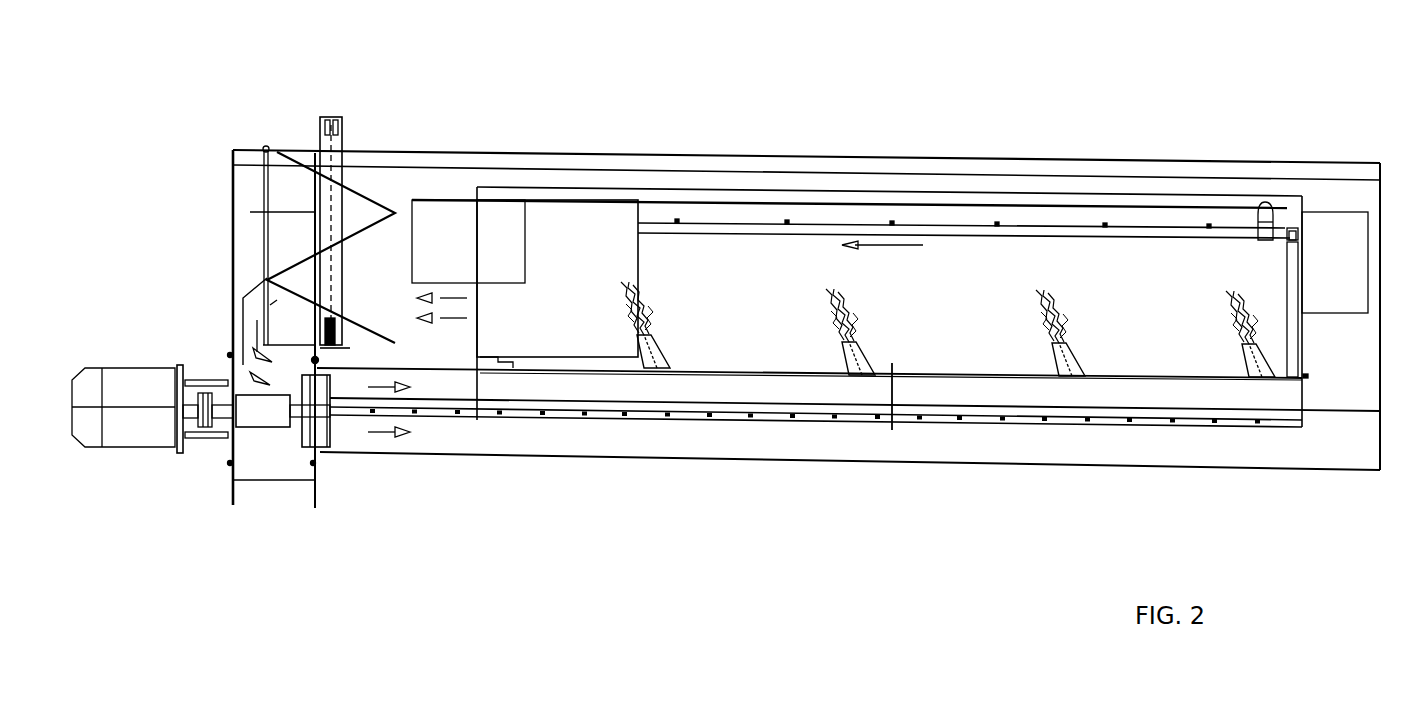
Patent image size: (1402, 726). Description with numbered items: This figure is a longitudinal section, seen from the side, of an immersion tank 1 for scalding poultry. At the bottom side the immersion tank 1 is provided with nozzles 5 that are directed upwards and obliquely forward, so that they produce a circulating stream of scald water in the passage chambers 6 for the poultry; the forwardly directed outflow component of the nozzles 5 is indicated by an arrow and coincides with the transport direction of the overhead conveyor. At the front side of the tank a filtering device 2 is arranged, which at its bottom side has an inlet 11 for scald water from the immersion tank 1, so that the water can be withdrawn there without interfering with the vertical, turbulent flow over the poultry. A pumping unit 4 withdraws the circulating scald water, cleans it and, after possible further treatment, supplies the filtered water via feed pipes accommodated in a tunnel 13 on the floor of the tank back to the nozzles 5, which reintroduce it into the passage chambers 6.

The immersion tank 1 is at (896, 130).
The filtering device 2 is at (368, 292).
The pumping unit 4 is at (127, 345).
The nozzles 5 is at (683, 343).
The passage chambers 6 is at (954, 297).
The inlet 11 is at (462, 305).
The tunnel 13 is at (816, 396).